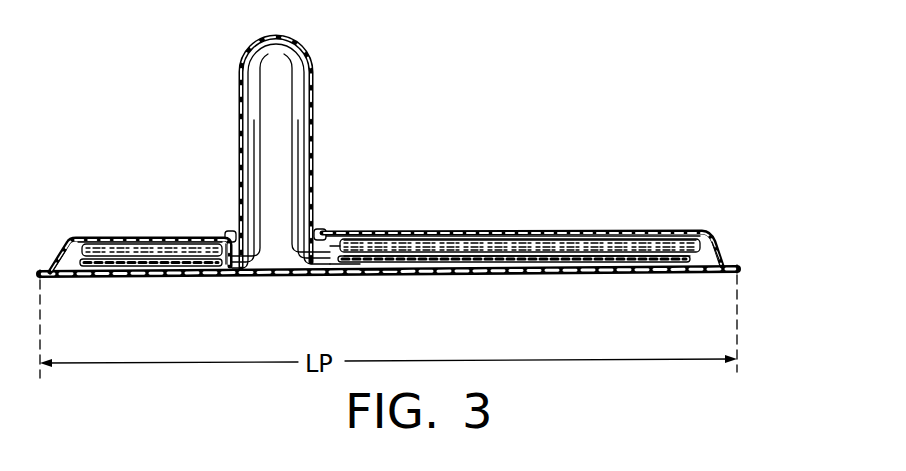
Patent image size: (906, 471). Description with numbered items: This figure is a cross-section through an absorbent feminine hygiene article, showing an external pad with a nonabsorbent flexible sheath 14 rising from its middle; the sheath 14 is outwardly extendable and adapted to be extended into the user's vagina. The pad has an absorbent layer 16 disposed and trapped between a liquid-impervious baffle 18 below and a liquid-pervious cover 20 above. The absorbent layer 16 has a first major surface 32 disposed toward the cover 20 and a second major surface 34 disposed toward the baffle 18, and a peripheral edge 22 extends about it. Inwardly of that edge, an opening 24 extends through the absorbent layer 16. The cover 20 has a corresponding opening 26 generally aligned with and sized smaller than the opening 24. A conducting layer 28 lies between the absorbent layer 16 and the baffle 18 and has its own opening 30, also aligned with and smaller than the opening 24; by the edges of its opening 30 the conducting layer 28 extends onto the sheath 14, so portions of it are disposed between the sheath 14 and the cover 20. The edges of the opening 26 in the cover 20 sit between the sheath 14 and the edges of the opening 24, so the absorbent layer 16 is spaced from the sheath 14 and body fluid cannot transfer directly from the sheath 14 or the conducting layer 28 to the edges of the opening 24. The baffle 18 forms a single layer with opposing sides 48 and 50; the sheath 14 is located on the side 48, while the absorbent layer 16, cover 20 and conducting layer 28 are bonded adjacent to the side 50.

The sheath 14 is at (314, 80).
The absorbent layer 16 is at (137, 238).
The baffle 18 is at (500, 278).
The cover 20 is at (88, 236).
The peripheral edge 22 is at (68, 252).
The opening 24 is at (228, 238).
The opening 26 is at (300, 226).
The conducting layer 28 is at (226, 236).
The opening 30 is at (246, 220).
The first major surface 32 is at (560, 240).
The second major surface 34 is at (596, 263).
The side 48 is at (354, 276).
The side 50 is at (384, 268).